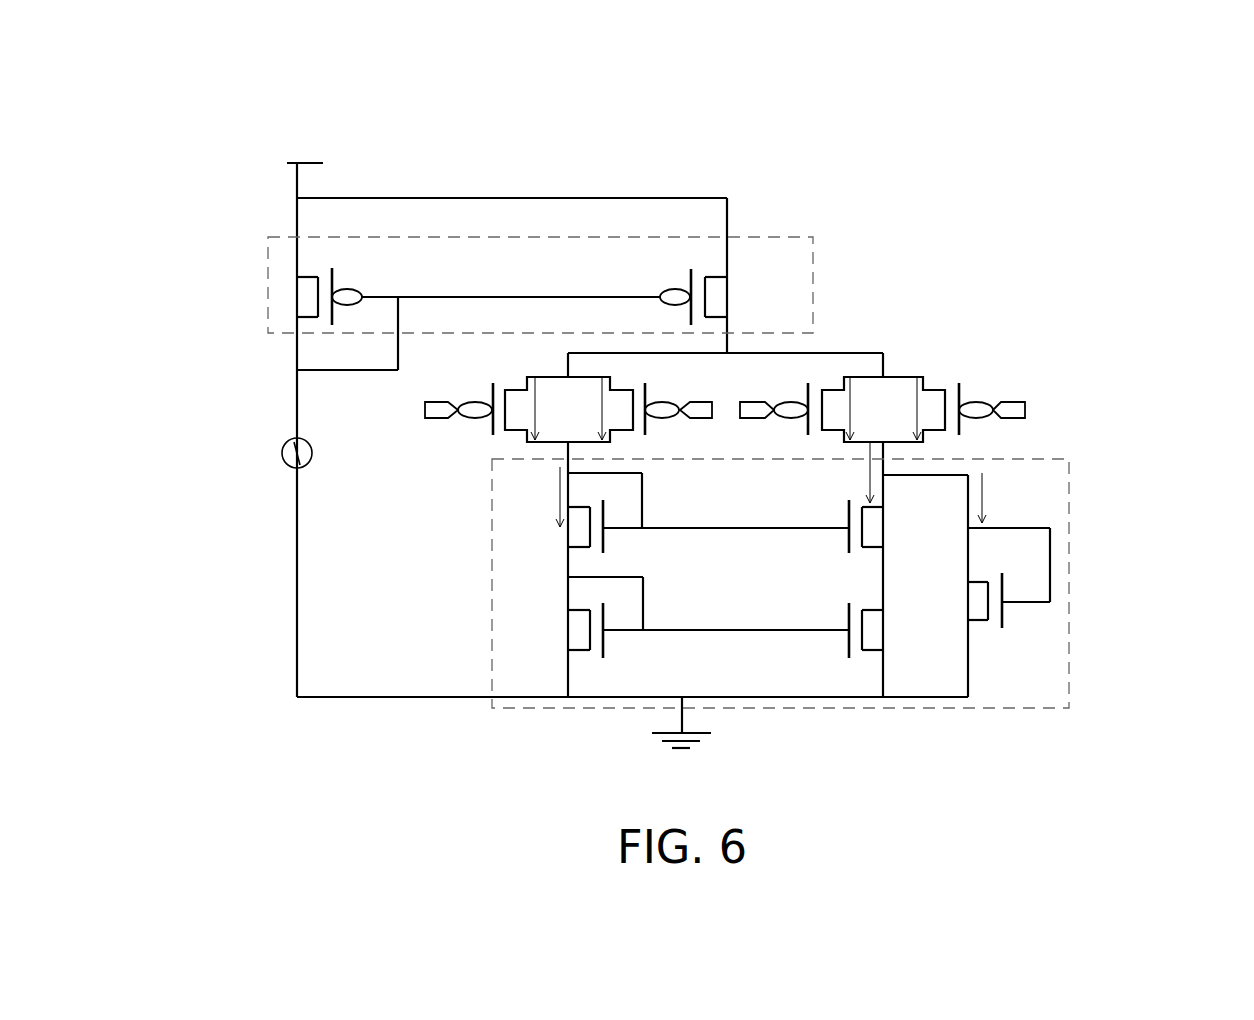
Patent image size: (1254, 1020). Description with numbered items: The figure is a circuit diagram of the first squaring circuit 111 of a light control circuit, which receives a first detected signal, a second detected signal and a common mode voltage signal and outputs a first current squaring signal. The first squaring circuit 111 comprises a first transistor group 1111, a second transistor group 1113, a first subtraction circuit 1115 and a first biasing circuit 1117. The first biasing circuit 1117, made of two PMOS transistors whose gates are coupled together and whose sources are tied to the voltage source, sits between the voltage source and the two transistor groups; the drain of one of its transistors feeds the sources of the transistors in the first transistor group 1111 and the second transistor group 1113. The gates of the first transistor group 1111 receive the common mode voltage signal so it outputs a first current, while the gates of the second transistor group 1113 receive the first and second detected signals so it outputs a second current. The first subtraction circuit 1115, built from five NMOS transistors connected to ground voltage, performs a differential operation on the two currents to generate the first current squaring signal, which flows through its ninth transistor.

The first squaring circuit 111 is at (200, 122).
The first transistor group 1111 is at (514, 441).
The second transistor group 1113 is at (904, 369).
The first subtraction circuit 1115 is at (1069, 652).
The first biasing circuit 1117 is at (268, 282).